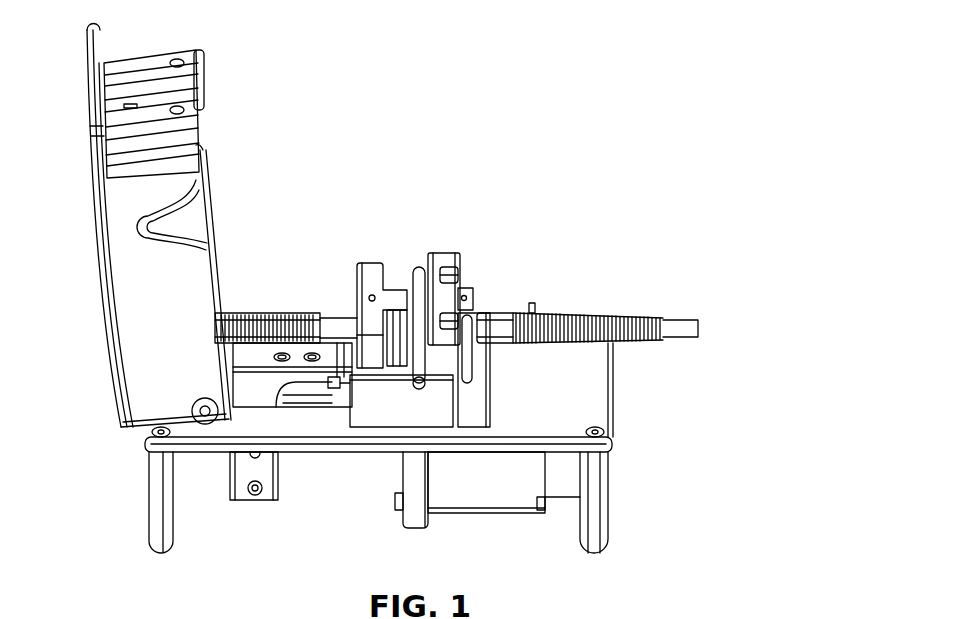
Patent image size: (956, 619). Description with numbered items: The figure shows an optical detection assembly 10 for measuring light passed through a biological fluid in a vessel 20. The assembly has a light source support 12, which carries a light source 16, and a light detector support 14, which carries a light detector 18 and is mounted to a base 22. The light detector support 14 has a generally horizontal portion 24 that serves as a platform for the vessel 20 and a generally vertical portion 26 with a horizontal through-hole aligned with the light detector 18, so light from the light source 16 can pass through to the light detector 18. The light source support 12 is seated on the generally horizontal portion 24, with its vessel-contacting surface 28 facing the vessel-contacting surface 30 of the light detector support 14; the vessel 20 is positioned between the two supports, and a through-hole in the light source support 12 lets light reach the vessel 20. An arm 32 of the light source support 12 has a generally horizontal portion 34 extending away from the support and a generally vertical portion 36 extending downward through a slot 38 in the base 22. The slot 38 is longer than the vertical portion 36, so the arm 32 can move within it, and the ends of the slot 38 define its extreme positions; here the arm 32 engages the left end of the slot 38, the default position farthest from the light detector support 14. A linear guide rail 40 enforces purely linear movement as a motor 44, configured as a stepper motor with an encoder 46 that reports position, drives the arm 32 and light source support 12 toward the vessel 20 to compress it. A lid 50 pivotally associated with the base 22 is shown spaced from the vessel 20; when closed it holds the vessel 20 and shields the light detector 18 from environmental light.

The optical detection assembly 10 is at (594, 132).
The light source support 12 is at (346, 259).
The light detector support 14 is at (462, 243).
The light source 16 is at (305, 313).
The light detector 18 is at (583, 315).
The vessel 20 is at (430, 255).
The base 22 is at (604, 389).
The generally horizontal portion 24 is at (392, 406).
The generally vertical portion 26 is at (455, 293).
The vessel-contacting surface 28 is at (410, 290).
The vessel-contacting surface 30 is at (424, 262).
The arm 32 is at (226, 490).
The generally horizontal portion 34 is at (244, 345).
The generally vertical portion 36 is at (267, 494).
The slot 38 is at (300, 409).
The linear guide rail 40 is at (333, 378).
The motor 44 is at (470, 498).
The encoder 46 is at (562, 491).
The lid 50 is at (137, 350).